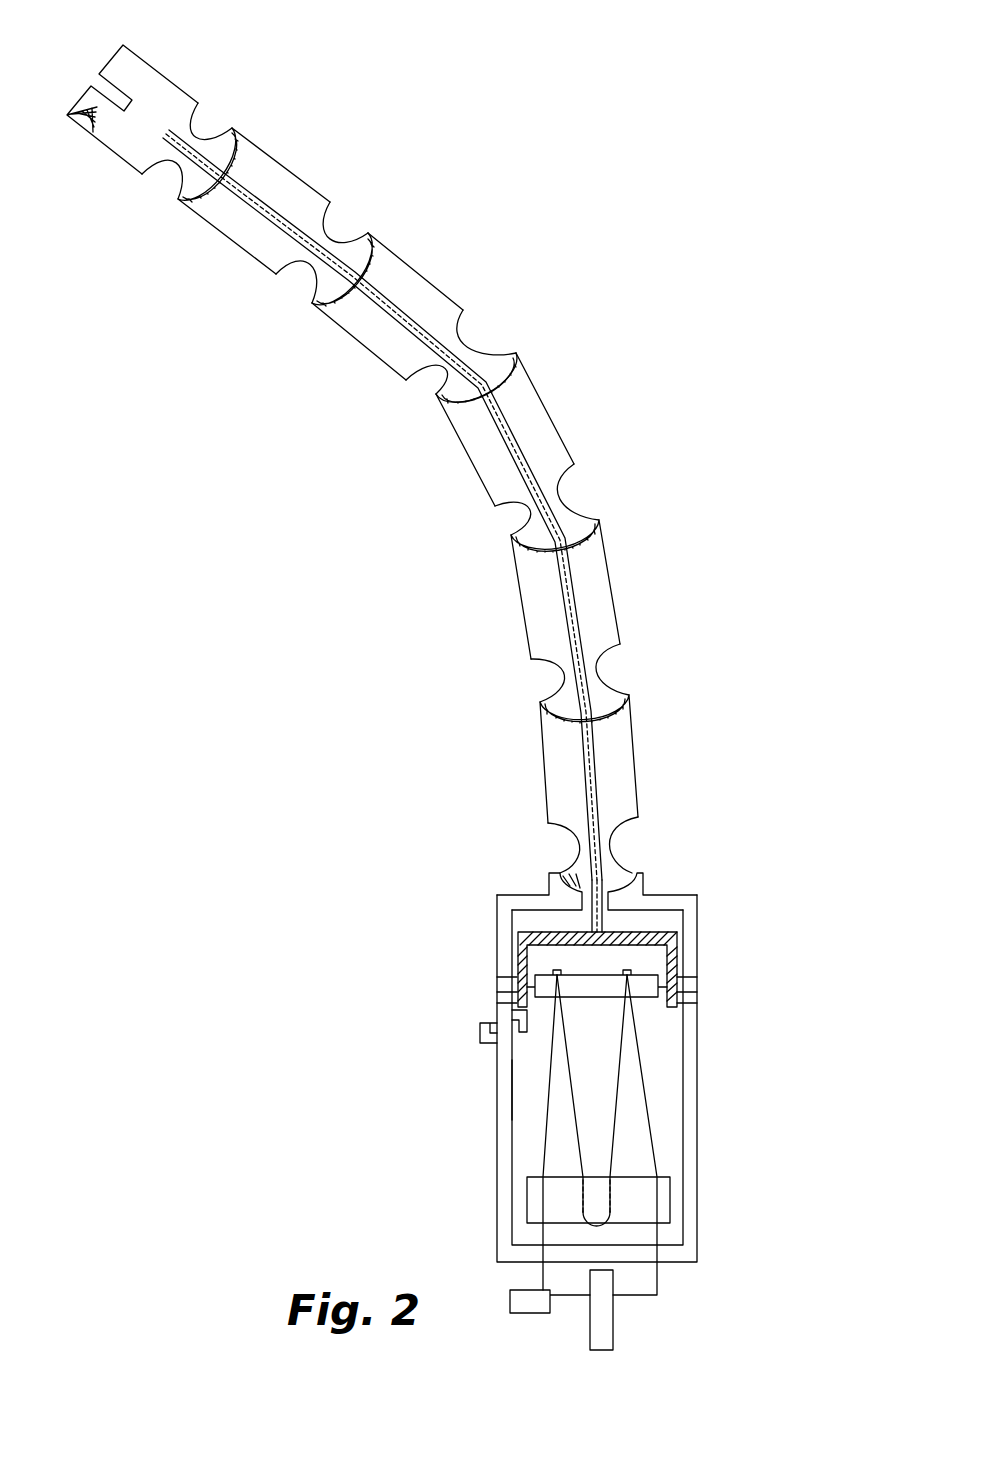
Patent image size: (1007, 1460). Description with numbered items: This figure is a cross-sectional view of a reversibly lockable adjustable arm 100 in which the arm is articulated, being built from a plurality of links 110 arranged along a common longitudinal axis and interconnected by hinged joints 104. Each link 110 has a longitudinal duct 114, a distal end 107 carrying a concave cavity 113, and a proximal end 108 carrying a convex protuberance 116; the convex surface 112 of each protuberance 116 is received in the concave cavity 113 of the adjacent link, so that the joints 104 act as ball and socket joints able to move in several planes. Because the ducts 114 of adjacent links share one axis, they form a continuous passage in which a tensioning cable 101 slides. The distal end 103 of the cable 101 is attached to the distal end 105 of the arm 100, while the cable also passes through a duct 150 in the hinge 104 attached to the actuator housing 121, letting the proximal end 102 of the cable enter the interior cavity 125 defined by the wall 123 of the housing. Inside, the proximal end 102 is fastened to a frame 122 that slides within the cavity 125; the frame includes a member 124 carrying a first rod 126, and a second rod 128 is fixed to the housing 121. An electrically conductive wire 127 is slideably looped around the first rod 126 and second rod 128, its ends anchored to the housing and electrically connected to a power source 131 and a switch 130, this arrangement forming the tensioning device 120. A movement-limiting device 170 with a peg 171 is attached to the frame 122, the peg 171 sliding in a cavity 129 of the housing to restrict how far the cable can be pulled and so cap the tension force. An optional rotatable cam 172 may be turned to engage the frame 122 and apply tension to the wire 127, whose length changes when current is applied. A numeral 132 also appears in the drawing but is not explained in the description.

The adjustable arm 100 is at (383, 445).
The tensioning cable 101 is at (518, 433).
The proximal end of tensioning cable 102 is at (591, 926).
The distal end of tensioning cable 103 is at (173, 133).
The hinged joint 104 is at (557, 854).
The distal end of adjustable arm 105 is at (155, 66).
The distal end of link 107 is at (384, 236).
The proximal end of link 108 is at (621, 677).
The link 110 is at (425, 275).
The convex surface 112 is at (508, 377).
The concave cavity 113 is at (437, 388).
The duct 114 is at (400, 360).
The convex protuberance 116 is at (493, 366).
The tensioning device 120 is at (535, 1078).
The actuator housing 121 is at (607, 847).
The frame 122 is at (599, 950).
The wall 123 is at (555, 1077).
The member 124 is at (517, 1087).
The interior cavity 125 is at (665, 1090).
The first rod 126 is at (646, 982).
The electrically conductive wire 127 is at (658, 1150).
The second rod 128 is at (648, 1210).
The cavity 129 is at (500, 1002).
The switch 130 is at (510, 1296).
The power source 131 is at (607, 1310).
The side wall 132 is at (522, 968).
The duct 150 is at (603, 902).
The movement-limiting device 170 is at (493, 992).
The peg 171 is at (694, 993).
The rotatable cam 172 is at (478, 1037).